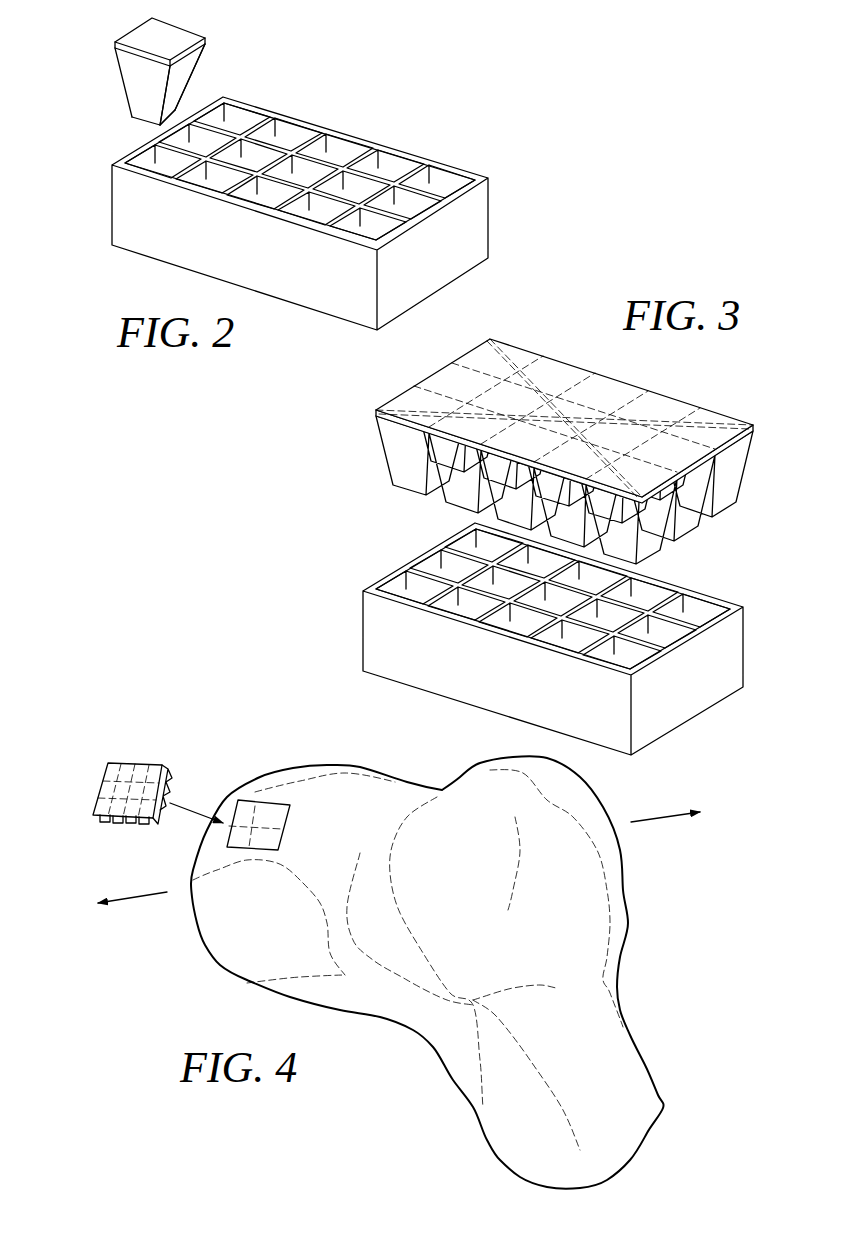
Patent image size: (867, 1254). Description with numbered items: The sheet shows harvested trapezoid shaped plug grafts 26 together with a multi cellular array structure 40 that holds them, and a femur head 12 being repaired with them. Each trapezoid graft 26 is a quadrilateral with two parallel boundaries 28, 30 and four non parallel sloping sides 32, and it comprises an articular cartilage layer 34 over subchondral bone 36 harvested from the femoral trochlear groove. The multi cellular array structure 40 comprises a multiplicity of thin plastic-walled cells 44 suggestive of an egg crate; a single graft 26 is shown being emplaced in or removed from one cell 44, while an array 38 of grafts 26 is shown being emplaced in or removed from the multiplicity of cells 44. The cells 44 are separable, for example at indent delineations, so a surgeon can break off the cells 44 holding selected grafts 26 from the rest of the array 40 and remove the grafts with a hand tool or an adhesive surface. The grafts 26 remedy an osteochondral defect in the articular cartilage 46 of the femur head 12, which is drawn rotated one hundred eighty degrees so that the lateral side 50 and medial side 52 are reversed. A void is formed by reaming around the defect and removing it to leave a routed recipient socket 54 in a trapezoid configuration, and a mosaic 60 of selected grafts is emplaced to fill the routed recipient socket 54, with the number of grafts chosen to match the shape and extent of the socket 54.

In FIG. 4, the femur head 12 is at (434, 951).
In FIG. 2, the trapezoid shaped plug graft 26 is at (167, 75).
In FIG. 3, the trapezoid shaped plug graft 26 is at (547, 383).
In FIG. 2, the parallel boundary 28 is at (145, 42).
In FIG. 2, the parallel boundary 30 is at (142, 122).
In FIG. 2, the non parallel sloping side 32 is at (193, 78).
In FIG. 2, the articular cartilage layer 34 is at (207, 43).
In FIG. 3, the articular cartilage layer 34 is at (757, 432).
In FIG. 4, the articular cartilage layer 34 is at (167, 768).
In FIG. 2, the subchondral bone 36 is at (170, 102).
In FIG. 4, the subchondral bone 36 is at (144, 825).
In FIG. 3, the array of grafts 38 is at (554, 440).
In FIG. 4, the array of grafts 38 is at (103, 767).
In FIG. 2, the multi cellular array structure 40 is at (335, 213).
In FIG. 3, the multi cellular array structure 40 is at (583, 639).
In FIG. 2, the thin plastic-walled cell 44 is at (388, 170).
In FIG. 3, the thin plastic-walled cell 44 is at (567, 630).
In FIG. 4, the articular cartilage 46 is at (365, 805).
In FIG. 4, the lateral side 50 is at (115, 906).
In FIG. 4, the medial side 52 is at (681, 810).
In FIG. 4, the routed recipient socket 54 is at (270, 825).
In FIG. 4, the mosaic of selected grafts 60 is at (149, 790).